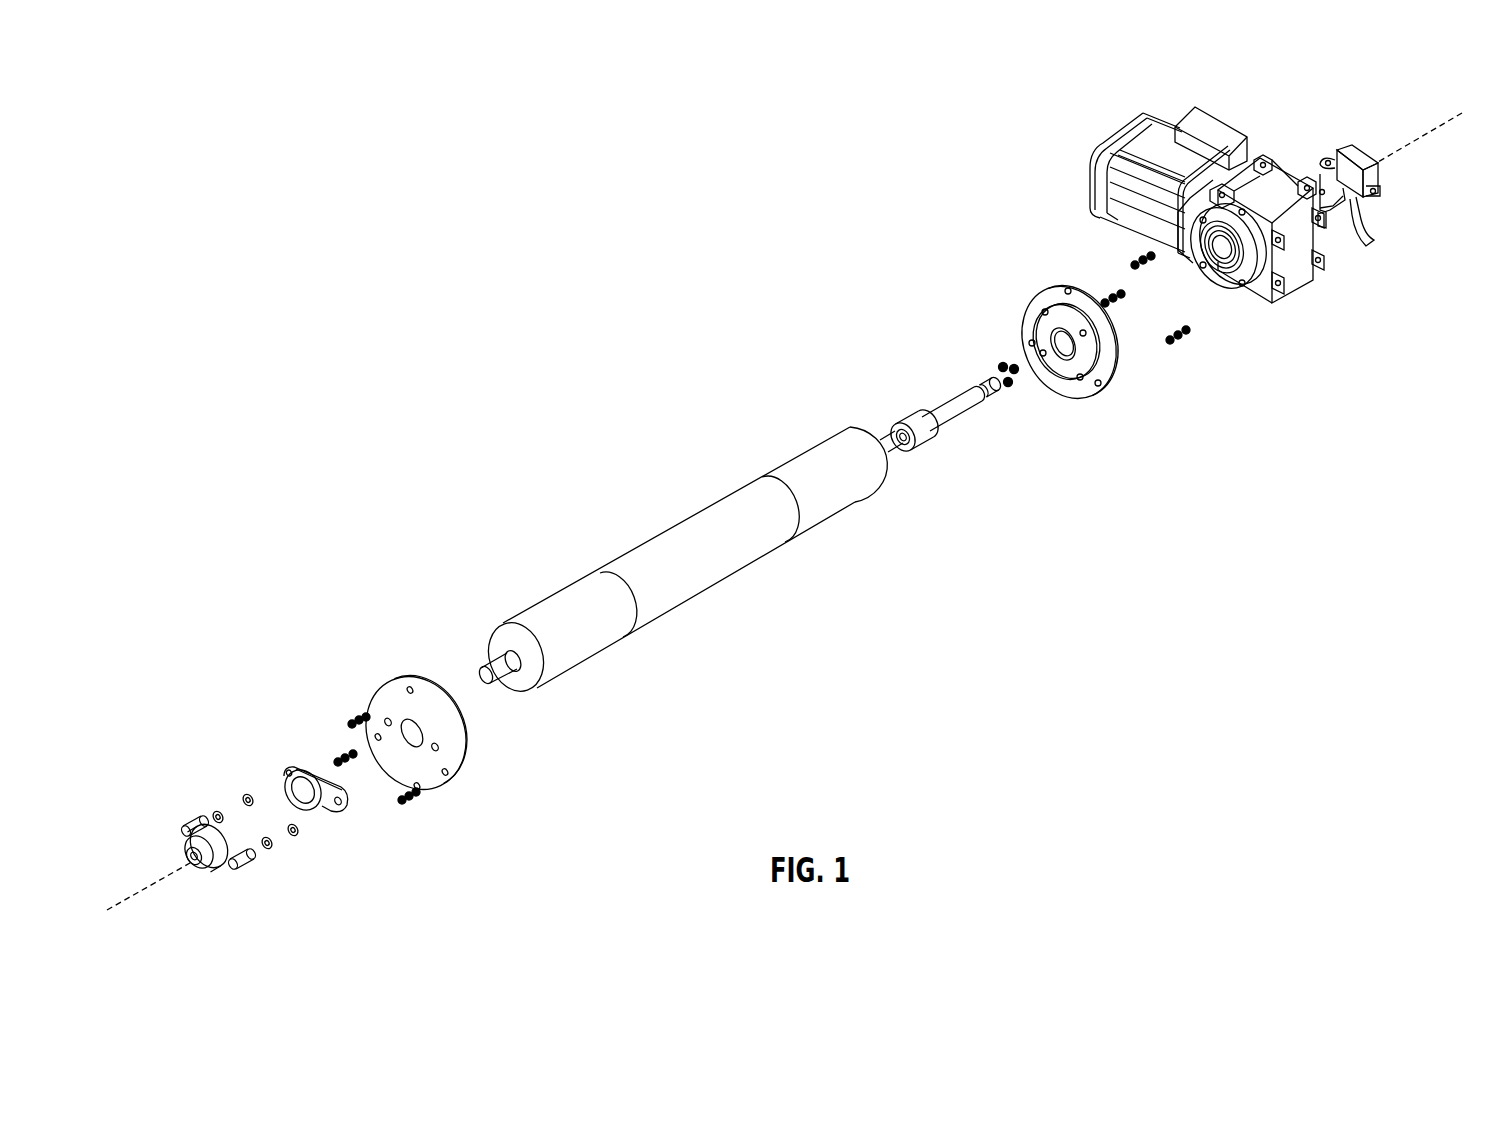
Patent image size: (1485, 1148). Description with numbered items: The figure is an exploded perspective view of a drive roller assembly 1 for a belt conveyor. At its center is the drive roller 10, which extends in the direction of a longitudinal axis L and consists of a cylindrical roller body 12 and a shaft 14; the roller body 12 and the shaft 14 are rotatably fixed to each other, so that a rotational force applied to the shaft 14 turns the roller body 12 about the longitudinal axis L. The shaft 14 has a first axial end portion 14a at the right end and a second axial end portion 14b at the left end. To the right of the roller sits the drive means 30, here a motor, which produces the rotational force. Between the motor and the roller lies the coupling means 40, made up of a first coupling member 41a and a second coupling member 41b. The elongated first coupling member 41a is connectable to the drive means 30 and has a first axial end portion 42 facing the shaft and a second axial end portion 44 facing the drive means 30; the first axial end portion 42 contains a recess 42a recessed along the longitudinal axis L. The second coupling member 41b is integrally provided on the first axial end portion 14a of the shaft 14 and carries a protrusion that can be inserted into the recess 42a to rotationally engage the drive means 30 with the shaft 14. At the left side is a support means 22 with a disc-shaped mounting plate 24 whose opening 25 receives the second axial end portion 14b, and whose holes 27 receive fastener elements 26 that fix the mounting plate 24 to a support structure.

The drive roller assembly 1 is at (537, 395).
The drive roller 10 is at (654, 522).
The roller body 12 is at (777, 467).
The shaft 14 is at (503, 640).
The first axial end portion 14a is at (875, 409).
The second axial end portion 14b is at (497, 688).
The support means 22 is at (398, 677).
The mounting plate 24 is at (394, 728).
The opening 25 is at (348, 727).
The fastener elements 26 is at (190, 826).
The holes 27 is at (388, 720).
The drive means 30 is at (1166, 98).
The coupling means 40 is at (1050, 450).
The first coupling member 41a is at (948, 413).
The second coupling member 41b is at (886, 428).
The first axial end portion 42 is at (895, 427).
The recess 42a is at (910, 452).
The second axial end portion 44 is at (980, 390).
The longitudinal axis L is at (1390, 166).